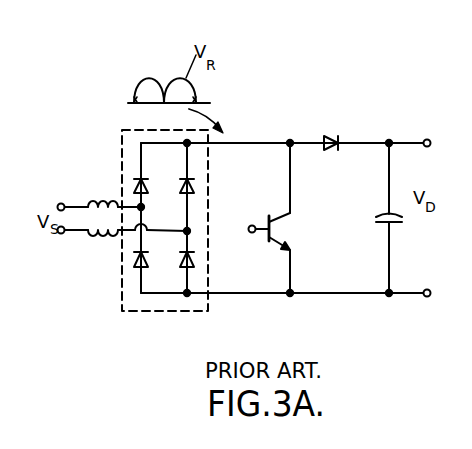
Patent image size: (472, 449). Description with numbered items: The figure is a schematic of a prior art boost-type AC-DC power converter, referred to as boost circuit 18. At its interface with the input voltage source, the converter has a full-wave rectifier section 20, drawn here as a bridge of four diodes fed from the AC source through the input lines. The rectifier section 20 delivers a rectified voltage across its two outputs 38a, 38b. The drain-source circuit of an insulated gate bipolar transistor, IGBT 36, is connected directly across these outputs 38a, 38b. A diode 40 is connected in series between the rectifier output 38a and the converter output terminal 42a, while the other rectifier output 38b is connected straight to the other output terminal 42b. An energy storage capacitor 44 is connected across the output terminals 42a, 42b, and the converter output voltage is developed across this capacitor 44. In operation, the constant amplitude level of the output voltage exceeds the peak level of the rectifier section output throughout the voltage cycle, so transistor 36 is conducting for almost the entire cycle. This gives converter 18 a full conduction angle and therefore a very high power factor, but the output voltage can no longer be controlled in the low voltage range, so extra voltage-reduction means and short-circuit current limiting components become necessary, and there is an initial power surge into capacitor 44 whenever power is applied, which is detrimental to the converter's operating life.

The boost circuit 18 is at (171, 323).
The full-wave rectifier section 20 is at (116, 291).
The IGBT 36 is at (284, 209).
The output of rectifier section 38a is at (290, 133).
The output of rectifier section 38b is at (289, 295).
The diode 40 is at (327, 135).
The converter output terminal 42a is at (424, 140).
The output terminal 42b is at (431, 297).
The energy storage capacitor 44 is at (384, 210).